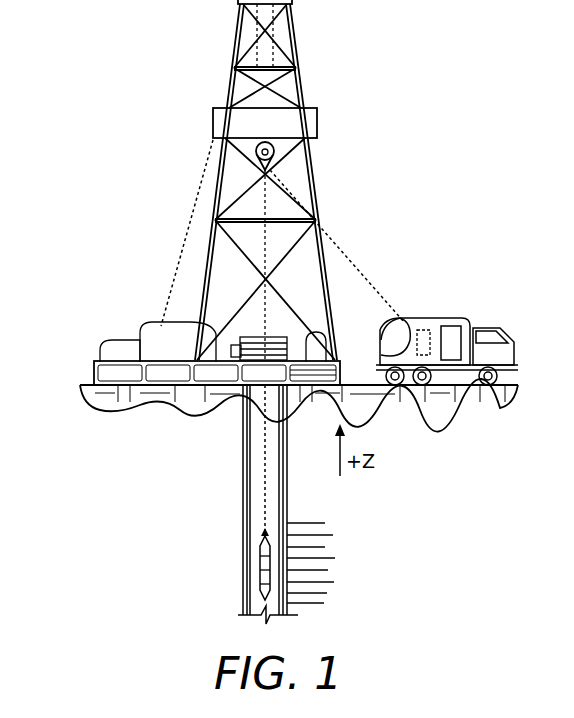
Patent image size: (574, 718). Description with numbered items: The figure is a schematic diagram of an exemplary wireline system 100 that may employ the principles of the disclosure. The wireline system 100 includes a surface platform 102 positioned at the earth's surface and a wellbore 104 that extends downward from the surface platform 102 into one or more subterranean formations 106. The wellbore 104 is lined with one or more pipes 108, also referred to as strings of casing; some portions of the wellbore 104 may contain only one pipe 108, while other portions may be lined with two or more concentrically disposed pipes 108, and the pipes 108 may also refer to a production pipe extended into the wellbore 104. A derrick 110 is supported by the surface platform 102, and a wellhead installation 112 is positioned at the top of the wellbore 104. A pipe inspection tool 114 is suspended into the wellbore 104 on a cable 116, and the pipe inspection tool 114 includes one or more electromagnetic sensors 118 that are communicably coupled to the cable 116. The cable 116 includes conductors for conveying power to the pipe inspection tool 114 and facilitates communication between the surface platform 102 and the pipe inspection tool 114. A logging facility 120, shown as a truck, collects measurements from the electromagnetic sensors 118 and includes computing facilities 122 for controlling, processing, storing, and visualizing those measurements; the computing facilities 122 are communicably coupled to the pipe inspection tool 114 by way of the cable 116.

The wireline system 100 is at (406, 113).
The surface platform 102 is at (94, 372).
The wellbore 104 is at (300, 491).
The subterranean formations 106 is at (337, 519).
The pipes 108 is at (242, 504).
The derrick 110 is at (300, 47).
The wellhead installation 112 is at (274, 337).
The pipe inspection tool 114 is at (250, 540).
The cable 116 is at (348, 259).
The electromagnetic sensors 118 is at (260, 572).
The logging facility 120 is at (470, 318).
The computing facilities 122 is at (427, 330).